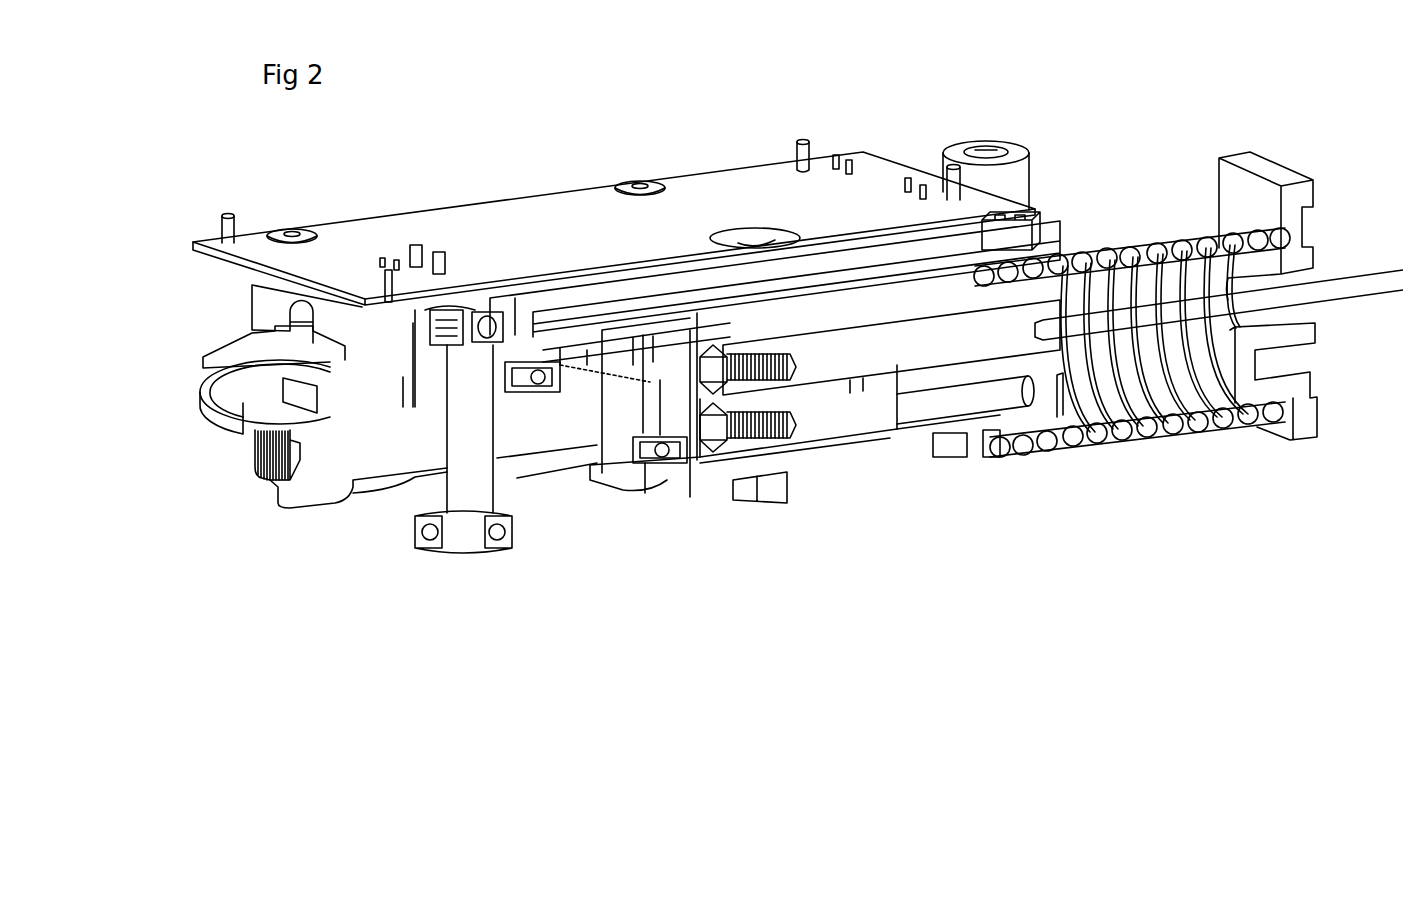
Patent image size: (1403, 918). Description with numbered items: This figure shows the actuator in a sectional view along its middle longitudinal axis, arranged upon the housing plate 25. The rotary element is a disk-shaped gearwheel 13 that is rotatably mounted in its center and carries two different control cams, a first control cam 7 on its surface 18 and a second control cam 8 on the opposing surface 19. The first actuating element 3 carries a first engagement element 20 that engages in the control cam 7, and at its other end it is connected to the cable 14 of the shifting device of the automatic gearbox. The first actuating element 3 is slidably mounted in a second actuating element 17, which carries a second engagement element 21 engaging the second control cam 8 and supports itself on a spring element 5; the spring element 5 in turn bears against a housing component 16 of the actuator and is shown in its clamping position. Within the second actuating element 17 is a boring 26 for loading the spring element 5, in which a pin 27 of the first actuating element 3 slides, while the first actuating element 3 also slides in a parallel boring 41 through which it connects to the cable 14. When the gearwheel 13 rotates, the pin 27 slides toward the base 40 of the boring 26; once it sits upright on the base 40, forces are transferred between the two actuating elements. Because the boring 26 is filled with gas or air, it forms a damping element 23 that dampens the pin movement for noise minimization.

The first actuating element 3 is at (837, 360).
The spring element 5 is at (1030, 450).
The control cam 7 is at (180, 393).
The second control cam 8 is at (317, 497).
The gearwheel 13 is at (297, 483).
The cable 14 is at (1230, 427).
The housing component 16 is at (1250, 158).
The second actuating element 17 is at (1037, 290).
The surface 18 is at (601, 390).
The surface 19 is at (405, 465).
The first engagement element 20 is at (538, 387).
The second engagement element 21 is at (670, 442).
The damping element 23 is at (990, 443).
The housing plate 25 is at (517, 205).
The boring 26 is at (930, 410).
The pin 27 is at (867, 413).
The base 40 is at (1037, 397).
The parallel boring 41 is at (927, 343).